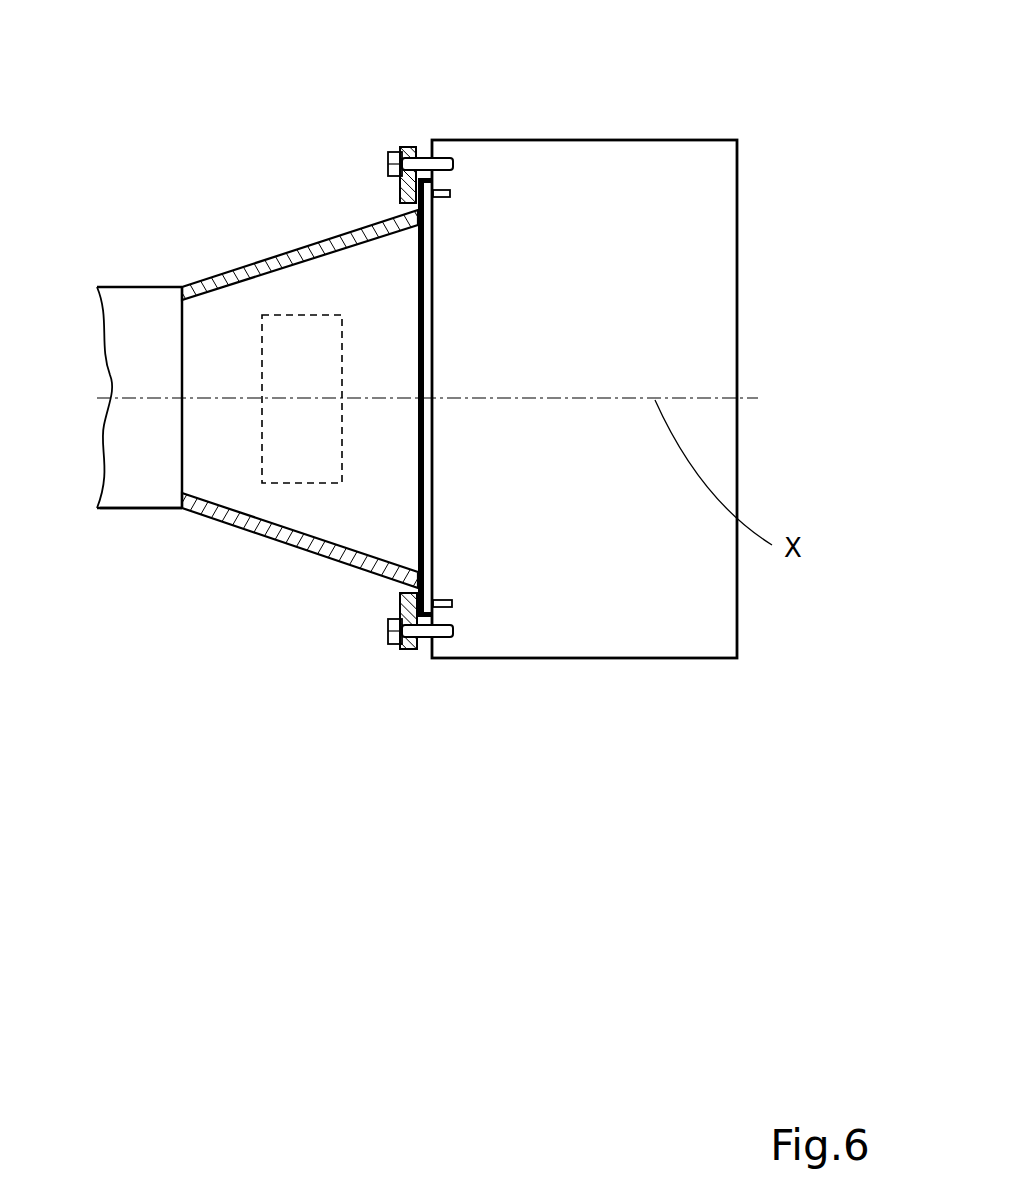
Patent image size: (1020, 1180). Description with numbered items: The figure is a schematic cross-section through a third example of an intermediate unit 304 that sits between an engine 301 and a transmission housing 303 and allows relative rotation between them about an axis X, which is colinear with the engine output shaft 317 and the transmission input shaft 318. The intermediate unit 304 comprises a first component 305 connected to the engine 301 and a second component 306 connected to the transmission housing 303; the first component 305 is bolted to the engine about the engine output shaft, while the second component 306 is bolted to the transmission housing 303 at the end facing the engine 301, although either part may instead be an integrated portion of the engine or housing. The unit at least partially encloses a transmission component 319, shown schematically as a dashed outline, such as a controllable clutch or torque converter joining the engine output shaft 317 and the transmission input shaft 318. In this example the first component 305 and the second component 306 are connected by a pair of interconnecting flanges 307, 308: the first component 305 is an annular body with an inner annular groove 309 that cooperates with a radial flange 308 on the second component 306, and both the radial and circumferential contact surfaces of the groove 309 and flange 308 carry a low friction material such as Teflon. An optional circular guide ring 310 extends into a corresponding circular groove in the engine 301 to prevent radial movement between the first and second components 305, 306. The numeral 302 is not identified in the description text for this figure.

The engine 301 is at (503, 128).
The inlet pipe 302 is at (120, 262).
The transmission housing 303 is at (157, 512).
The intermediate unit 304 is at (285, 455).
The first component 305 is at (412, 652).
The second component 306 is at (222, 527).
The interconnecting flange 307 is at (397, 176).
The radial flange 308 is at (428, 290).
The inner annular groove 309 is at (430, 630).
The circular guide ring 310 is at (464, 604).
The engine output shaft 317 is at (646, 373).
The transmission input shaft 318 is at (210, 382).
The transmission component 319 is at (347, 310).